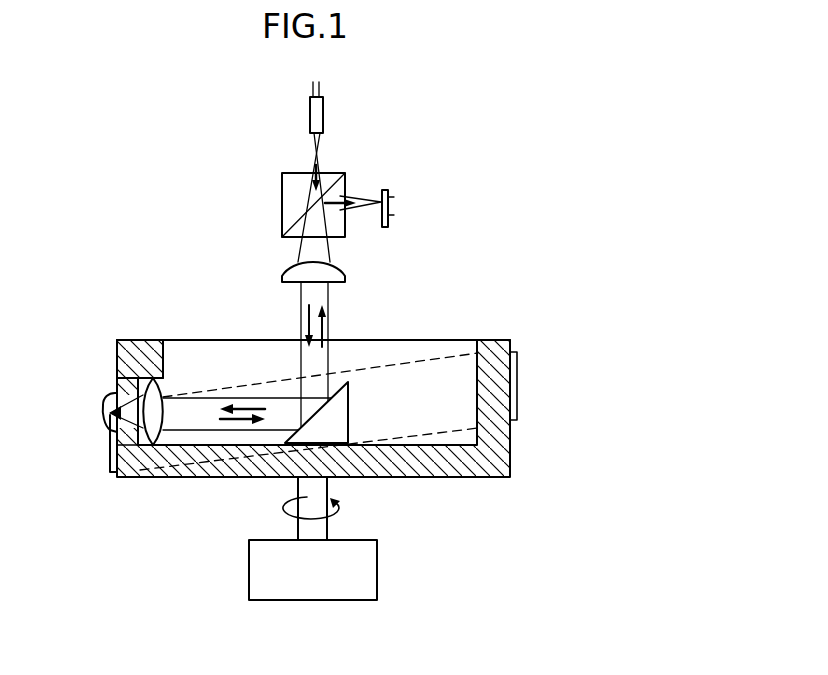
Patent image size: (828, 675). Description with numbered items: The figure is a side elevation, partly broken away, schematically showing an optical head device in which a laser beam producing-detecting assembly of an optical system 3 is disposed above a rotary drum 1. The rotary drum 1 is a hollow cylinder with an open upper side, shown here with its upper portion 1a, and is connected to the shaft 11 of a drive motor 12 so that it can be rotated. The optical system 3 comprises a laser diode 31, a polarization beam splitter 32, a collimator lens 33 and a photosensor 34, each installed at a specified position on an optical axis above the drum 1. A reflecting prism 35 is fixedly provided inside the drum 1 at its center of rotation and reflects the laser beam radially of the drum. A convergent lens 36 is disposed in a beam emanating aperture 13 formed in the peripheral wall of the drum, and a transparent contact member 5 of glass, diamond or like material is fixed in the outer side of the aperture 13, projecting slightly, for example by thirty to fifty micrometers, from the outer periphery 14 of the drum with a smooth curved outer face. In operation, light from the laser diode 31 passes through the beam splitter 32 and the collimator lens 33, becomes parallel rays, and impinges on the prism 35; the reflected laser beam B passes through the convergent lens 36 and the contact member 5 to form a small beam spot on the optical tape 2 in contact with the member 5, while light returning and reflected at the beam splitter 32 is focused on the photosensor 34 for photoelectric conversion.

The rotary drum 1 is at (468, 463).
The housing top cover 1a is at (407, 352).
The optical tape 2 is at (108, 468).
The optical system 3 is at (368, 196).
The transparent contact member 5 is at (105, 413).
The shaft 11 is at (313, 493).
The drive motor 12 is at (349, 582).
The beam emanating aperture 13 is at (140, 378).
The outer periphery 14 is at (117, 381).
The laser diode 31 is at (320, 114).
The polarization beam splitter 32 is at (298, 174).
The collimator lens 33 is at (345, 276).
The photosensor 34 is at (387, 188).
The reflecting prism 35 is at (338, 412).
The convergent lens 36 is at (150, 446).
The laser beam B is at (208, 397).